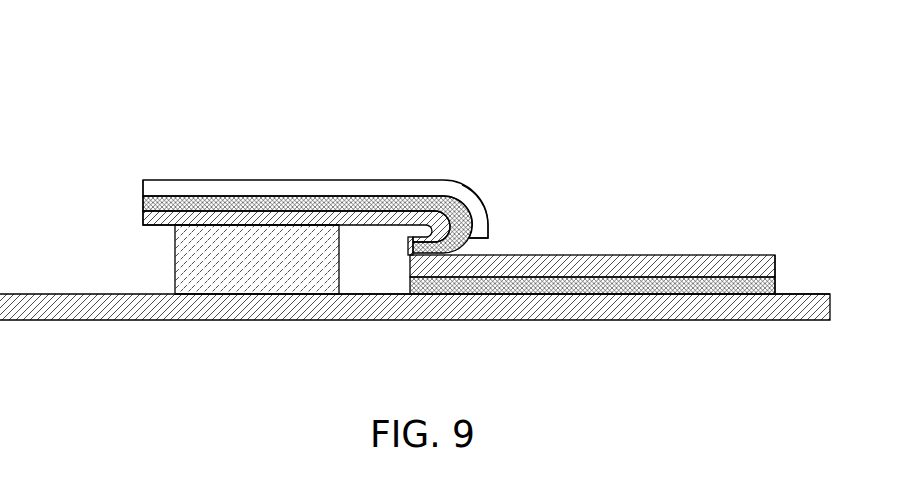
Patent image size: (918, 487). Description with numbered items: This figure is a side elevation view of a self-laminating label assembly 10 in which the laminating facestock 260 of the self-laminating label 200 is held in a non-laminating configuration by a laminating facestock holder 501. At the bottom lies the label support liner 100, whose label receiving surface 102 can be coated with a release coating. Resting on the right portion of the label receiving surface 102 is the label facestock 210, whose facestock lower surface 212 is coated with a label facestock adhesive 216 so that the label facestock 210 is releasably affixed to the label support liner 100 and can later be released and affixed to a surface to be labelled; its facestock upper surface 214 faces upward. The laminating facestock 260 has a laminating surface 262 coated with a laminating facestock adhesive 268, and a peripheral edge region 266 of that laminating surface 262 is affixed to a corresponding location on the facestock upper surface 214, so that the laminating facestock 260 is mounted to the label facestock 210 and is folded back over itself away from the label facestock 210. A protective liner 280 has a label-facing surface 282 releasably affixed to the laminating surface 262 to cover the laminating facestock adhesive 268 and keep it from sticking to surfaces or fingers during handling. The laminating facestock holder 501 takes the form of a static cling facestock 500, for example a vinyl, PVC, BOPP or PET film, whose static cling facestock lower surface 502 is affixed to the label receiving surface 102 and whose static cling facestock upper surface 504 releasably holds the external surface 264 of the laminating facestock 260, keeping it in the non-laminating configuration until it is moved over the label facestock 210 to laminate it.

The display device 10 is at (607, 83).
The label support liner 100 is at (678, 305).
The label receiving surface 102 is at (592, 296).
The self-laminating label 200 is at (527, 188).
The label facestock 210 is at (760, 265).
The facestock lower surface 212 is at (762, 276).
The facestock upper surface 214 is at (713, 255).
The label facestock adhesive 216 is at (742, 285).
The laminating facestock 260 is at (238, 213).
The laminating surface 262 is at (305, 211).
The external surface 264 is at (288, 226).
The peripheral edge region 266 is at (417, 237).
The laminating facestock adhesive 268 is at (385, 211).
The protective liner 280 is at (480, 222).
The label-facing surface 282 is at (350, 195).
The static cling facestock 500 is at (187, 273).
The laminating facestock holder 501 is at (137, 262).
The static cling facestock lower surface 502 is at (218, 296).
The static cling facestock upper surface 504 is at (190, 224).